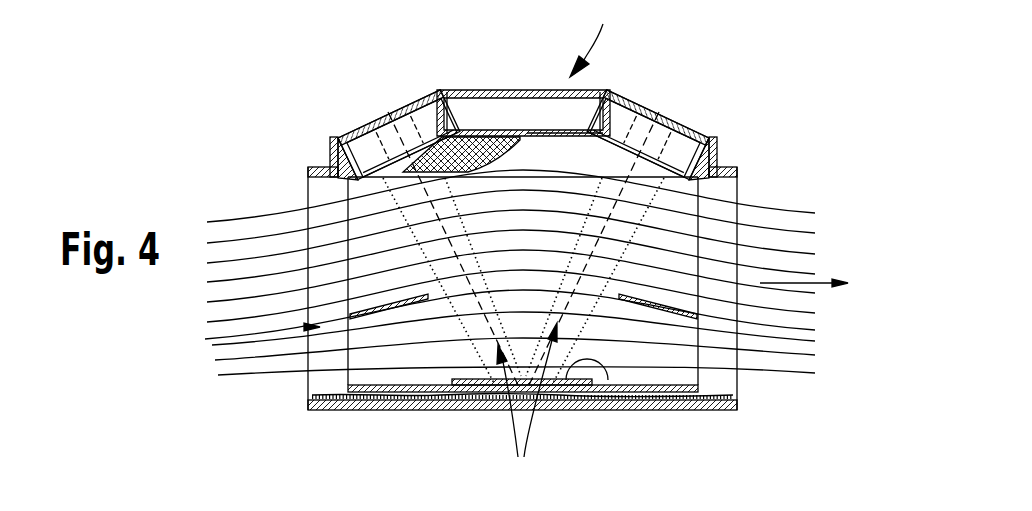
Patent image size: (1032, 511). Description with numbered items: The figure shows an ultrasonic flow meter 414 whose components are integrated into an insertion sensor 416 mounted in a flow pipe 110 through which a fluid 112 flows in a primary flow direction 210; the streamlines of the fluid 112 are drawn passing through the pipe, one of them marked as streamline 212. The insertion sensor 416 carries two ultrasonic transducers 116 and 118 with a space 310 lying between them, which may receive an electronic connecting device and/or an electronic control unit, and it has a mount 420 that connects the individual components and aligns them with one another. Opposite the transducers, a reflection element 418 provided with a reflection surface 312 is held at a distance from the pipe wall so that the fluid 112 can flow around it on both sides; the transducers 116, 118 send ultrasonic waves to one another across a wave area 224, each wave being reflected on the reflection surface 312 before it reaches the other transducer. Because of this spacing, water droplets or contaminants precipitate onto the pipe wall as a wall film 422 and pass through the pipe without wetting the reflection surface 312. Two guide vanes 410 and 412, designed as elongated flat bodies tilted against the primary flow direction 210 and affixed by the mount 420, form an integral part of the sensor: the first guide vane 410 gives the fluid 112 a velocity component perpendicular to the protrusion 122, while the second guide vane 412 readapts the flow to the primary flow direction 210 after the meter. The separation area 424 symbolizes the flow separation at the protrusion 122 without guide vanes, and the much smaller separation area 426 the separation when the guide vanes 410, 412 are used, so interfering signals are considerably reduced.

The flow pipe 110 is at (681, 410).
The fluid 112 is at (487, 323).
The ultrasonic transducer 116 is at (387, 130).
The ultrasonic transducer 118 is at (665, 132).
The protrusion 122 is at (583, 142).
The primary flow direction 210 is at (820, 280).
The fluid flow streamline 212 is at (272, 218).
The wave area 224 is at (527, 403).
The space 310 is at (517, 110).
The reflection surface 312 is at (605, 383).
The guide vane 410 is at (392, 312).
The guide vane 412 is at (648, 308).
The ultrasonic flow meter 414 is at (601, 38).
The insertion sensor 416 is at (724, 206).
The reflection element 418 is at (428, 392).
The mount 420 is at (735, 410).
The wall film 422 is at (333, 403).
The separation area 424 is at (479, 128).
The separation area 426 is at (452, 110).